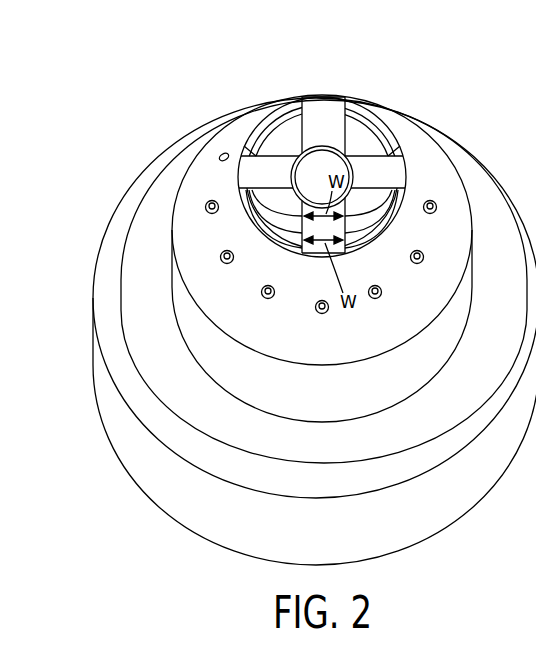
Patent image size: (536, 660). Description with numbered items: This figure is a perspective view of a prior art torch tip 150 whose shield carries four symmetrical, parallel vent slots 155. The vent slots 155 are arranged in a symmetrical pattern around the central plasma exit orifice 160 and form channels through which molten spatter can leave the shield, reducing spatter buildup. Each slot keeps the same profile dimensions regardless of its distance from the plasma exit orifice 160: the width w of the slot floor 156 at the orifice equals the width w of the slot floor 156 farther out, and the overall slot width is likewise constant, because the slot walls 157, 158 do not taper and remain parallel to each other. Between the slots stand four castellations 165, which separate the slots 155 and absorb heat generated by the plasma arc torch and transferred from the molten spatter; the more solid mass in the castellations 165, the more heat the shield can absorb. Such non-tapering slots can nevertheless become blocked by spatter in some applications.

The torch tip 150 is at (70, 84).
The vent slots 155 is at (317, 118).
The slot floor 156 is at (332, 112).
The slot wall 157 is at (262, 148).
The slot wall 158 is at (250, 190).
The plasma exit orifice 160 is at (385, 122).
The castellations 165 is at (287, 130).